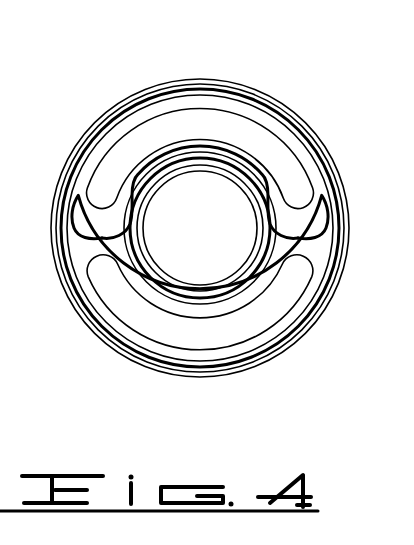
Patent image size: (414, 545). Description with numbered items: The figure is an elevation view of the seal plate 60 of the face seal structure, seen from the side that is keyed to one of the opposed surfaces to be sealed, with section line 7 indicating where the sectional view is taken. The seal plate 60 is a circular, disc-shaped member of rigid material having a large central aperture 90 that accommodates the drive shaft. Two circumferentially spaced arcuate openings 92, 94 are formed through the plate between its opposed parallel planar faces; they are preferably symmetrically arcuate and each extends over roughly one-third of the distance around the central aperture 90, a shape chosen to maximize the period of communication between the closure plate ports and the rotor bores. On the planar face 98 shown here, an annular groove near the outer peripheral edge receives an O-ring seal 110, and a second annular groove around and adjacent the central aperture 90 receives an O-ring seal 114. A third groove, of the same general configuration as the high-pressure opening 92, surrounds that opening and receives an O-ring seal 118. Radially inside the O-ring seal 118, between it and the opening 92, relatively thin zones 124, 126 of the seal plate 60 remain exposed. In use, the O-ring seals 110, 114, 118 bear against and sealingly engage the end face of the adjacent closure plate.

The seal plate 60 is at (99, 344).
The O-ring seal 110 is at (78, 296).
The planar face 98 is at (327, 252).
The O-ring seal 118 is at (292, 132).
The thin zone of the seal plate 124 is at (137, 120).
The thin zone of the seal plate 126 is at (236, 152).
The arcuate opening 92 is at (225, 134).
The arcuate opening 94 is at (220, 345).
The central aperture 90 is at (217, 228).
The O-ring seal 114 is at (147, 268).
The section line 7- 7 is at (202, 67).